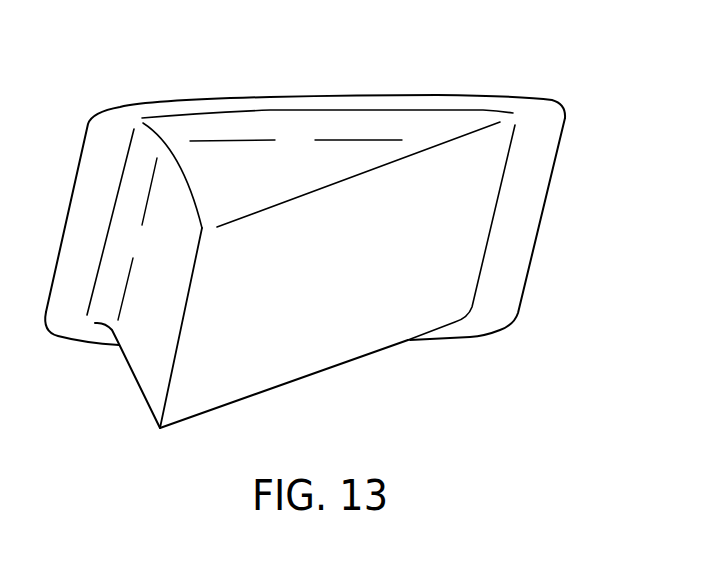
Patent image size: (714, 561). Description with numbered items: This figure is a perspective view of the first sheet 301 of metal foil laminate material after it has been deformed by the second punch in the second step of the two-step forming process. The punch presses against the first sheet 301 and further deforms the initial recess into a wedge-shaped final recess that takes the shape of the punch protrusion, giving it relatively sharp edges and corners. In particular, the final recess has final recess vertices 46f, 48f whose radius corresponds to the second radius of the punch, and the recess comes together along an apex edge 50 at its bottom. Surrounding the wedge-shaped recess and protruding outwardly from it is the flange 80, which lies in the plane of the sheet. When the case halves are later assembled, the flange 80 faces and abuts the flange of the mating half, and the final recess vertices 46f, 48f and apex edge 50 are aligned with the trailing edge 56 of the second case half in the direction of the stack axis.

The first sheet 301 is at (508, 100).
The flange 80 is at (543, 155).
The trailing edge 56 is at (490, 232).
The final recess vertex 46f is at (210, 230).
The apex edge 50 is at (165, 387).
The final recess vertex 48f is at (157, 432).